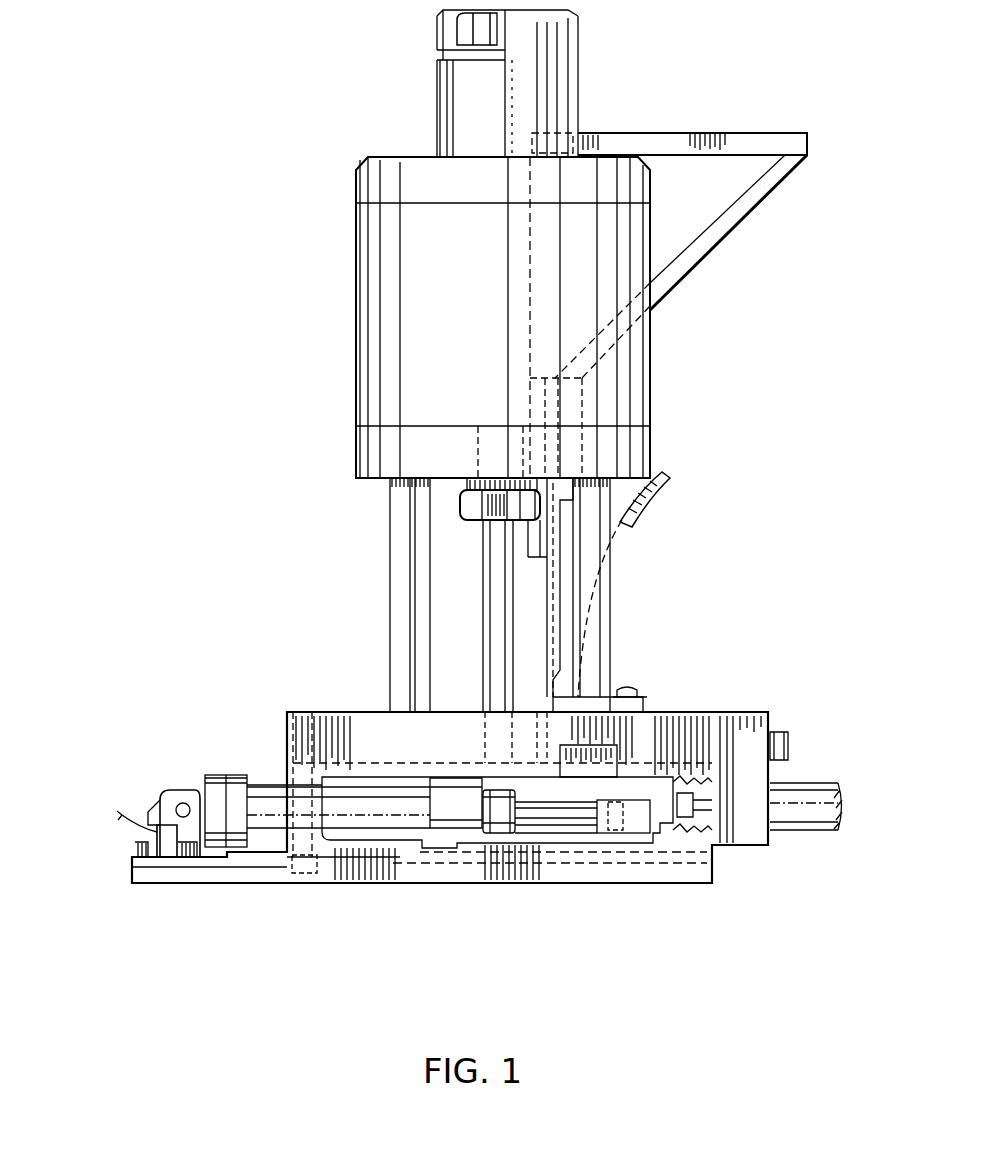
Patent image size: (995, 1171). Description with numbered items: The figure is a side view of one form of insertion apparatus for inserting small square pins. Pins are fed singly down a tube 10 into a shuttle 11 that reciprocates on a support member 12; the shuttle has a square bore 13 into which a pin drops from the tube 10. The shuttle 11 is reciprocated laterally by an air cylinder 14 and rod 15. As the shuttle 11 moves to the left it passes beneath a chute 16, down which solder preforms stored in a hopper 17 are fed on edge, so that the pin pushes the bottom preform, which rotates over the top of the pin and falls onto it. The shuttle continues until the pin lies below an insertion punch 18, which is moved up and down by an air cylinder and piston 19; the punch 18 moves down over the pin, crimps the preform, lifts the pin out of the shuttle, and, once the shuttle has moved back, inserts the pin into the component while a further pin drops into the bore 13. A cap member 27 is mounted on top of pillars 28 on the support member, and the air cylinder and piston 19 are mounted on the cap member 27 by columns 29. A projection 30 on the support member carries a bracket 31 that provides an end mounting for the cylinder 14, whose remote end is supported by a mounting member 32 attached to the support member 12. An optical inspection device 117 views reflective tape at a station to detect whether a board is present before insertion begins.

The tube 10 is at (633, 530).
The shuttle 11 is at (637, 822).
The support member 12 is at (538, 870).
The square bore 13 is at (615, 827).
The air cylinder 14 is at (335, 815).
The rod 15 is at (560, 812).
The chute 16 is at (547, 603).
The hopper 17 is at (672, 235).
The insertion punch 18 is at (495, 559).
The air cylinder and piston 19 is at (356, 337).
The cap member 27 is at (697, 723).
The pillars 28 is at (302, 790).
The columns 29 is at (405, 613).
The projection 30 is at (213, 868).
The bracket 31 is at (170, 812).
The mounting member 32 is at (495, 823).
The optical inspection device 117 is at (158, 848).